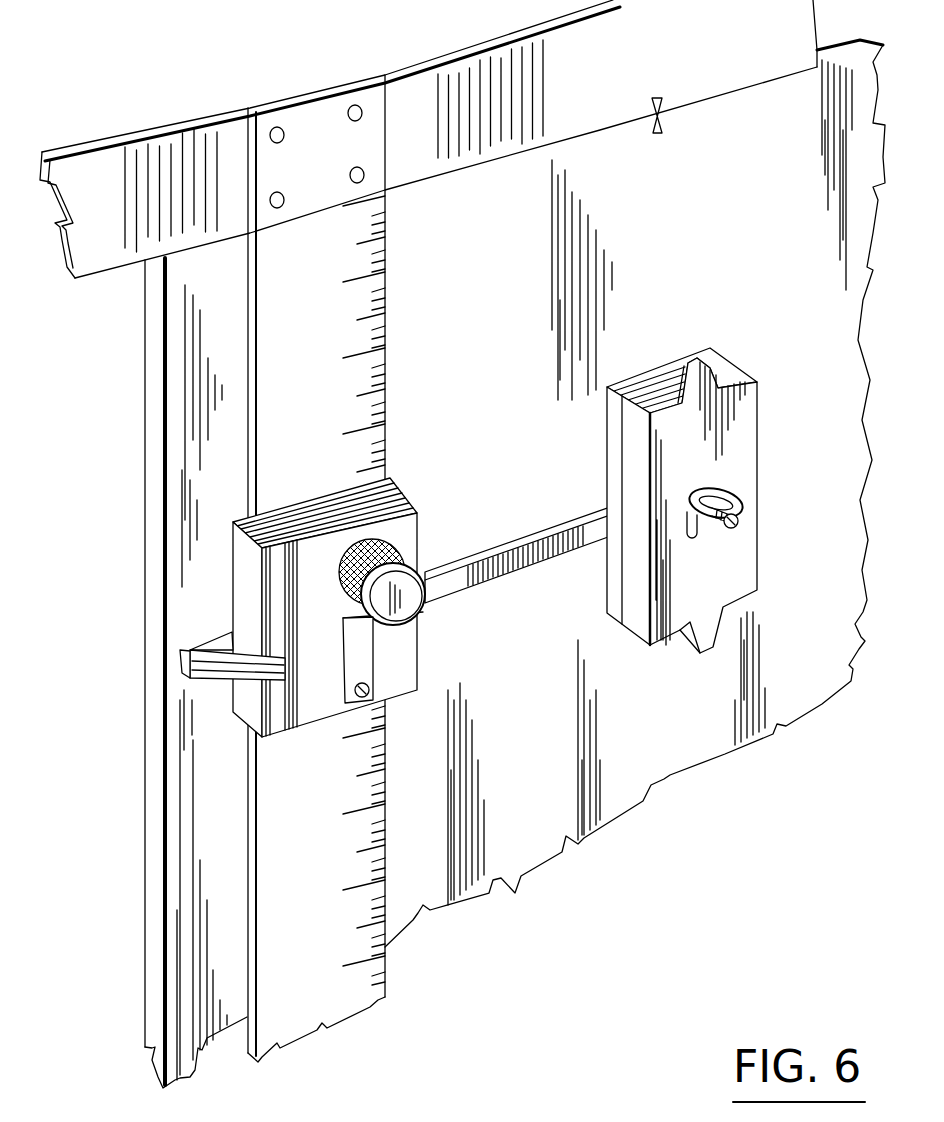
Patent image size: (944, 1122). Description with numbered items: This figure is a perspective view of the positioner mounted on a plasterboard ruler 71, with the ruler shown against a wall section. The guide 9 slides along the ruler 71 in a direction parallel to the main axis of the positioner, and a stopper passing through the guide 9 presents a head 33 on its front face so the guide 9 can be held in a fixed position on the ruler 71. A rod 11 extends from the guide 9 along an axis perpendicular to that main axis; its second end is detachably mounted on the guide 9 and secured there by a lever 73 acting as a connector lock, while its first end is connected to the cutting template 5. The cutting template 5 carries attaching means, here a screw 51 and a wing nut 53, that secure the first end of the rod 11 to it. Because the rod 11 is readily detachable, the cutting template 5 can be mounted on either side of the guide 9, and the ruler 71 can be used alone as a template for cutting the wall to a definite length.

The ruler 71 is at (386, 358).
The guide 9 is at (403, 488).
The rod 11 is at (539, 528).
The head 33 is at (421, 553).
The lever 73 is at (363, 668).
The cutting template 5 is at (760, 393).
The wing nut 53 is at (745, 497).
The screw 51 is at (737, 533).